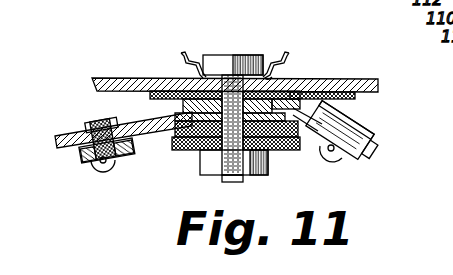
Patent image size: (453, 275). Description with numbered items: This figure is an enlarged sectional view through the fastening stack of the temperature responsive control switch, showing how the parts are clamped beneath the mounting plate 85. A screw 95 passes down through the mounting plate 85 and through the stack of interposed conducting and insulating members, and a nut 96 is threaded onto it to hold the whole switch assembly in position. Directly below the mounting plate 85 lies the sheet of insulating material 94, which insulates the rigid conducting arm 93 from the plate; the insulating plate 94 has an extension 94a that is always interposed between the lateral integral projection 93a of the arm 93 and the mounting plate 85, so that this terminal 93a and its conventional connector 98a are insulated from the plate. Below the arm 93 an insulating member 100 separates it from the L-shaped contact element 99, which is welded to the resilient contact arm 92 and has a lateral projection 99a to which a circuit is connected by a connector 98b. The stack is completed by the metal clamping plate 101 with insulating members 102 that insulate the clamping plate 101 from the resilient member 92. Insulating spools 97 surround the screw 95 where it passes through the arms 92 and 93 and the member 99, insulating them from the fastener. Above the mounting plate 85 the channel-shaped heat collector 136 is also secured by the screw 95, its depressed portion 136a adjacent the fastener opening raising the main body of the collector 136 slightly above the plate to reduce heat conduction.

The mounting plate 85 is at (370, 79).
The insulating plate 94 is at (157, 91).
The extension 94a is at (354, 98).
The screw 95 is at (212, 55).
The heat collector 136 is at (284, 54).
The depressed portion 136a is at (266, 76).
The conducting arm 93 is at (176, 107).
The insulating member 100 is at (168, 113).
The insulating spool 97 is at (222, 159).
The resilient contact arm 92 is at (266, 151).
The nut 96 is at (217, 172).
The clamping plate 101 is at (236, 182).
The connector 98b is at (90, 158).
The lateral projection 99a is at (74, 150).
The insulating member 102 is at (158, 150).
The connector 98a is at (364, 160).
The lateral integral projection 93a is at (376, 152).
The contact element 99 is at (318, 144).